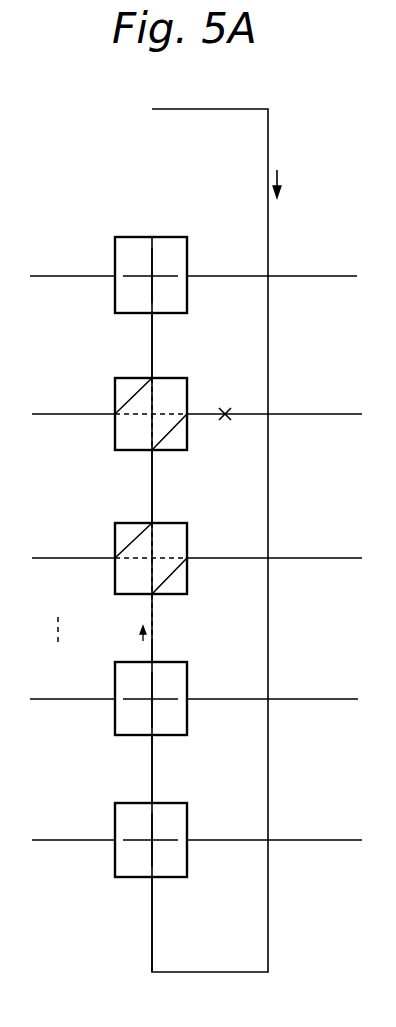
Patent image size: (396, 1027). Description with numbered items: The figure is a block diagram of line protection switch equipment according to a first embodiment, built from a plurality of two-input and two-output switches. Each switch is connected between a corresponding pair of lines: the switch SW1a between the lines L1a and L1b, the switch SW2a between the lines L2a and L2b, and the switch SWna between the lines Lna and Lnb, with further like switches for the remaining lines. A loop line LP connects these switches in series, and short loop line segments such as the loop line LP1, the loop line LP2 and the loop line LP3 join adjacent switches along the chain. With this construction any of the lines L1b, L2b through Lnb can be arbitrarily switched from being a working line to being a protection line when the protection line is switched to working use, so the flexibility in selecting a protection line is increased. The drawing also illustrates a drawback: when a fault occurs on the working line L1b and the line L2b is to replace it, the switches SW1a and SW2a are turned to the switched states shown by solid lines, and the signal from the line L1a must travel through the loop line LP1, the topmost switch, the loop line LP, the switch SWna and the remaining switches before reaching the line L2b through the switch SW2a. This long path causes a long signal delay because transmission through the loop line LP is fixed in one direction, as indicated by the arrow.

The loop line LP is at (197, 972).
The loop line LP1 is at (152, 328).
The loop path segment 2 LP2 is at (152, 468).
The loop path segment 3 LP3 is at (152, 602).
The two-input and two-output switch SW1a is at (154, 378).
The two-input and two-output switch SW2a is at (155, 523).
The two-input and two-output switch SWna is at (155, 803).
The line L1a is at (71, 403).
The working line L1b is at (281, 414).
The line L2a is at (71, 547).
The line L2b is at (281, 558).
The line Lna is at (70, 827).
The line Lnb is at (284, 840).